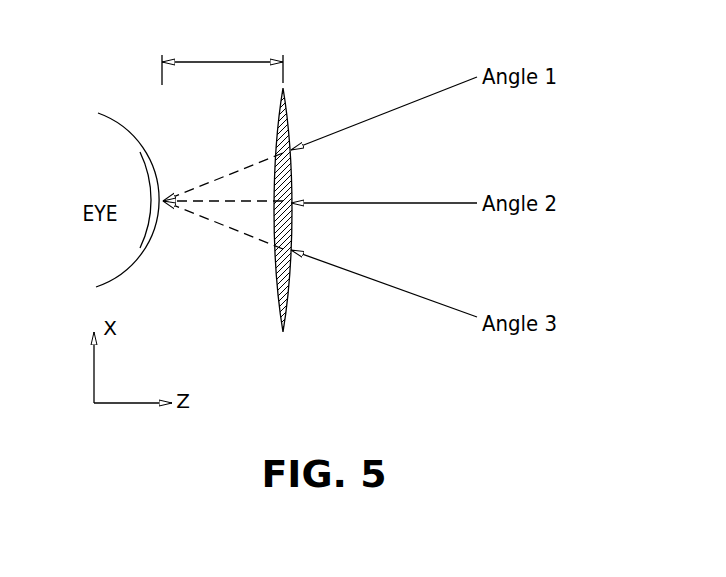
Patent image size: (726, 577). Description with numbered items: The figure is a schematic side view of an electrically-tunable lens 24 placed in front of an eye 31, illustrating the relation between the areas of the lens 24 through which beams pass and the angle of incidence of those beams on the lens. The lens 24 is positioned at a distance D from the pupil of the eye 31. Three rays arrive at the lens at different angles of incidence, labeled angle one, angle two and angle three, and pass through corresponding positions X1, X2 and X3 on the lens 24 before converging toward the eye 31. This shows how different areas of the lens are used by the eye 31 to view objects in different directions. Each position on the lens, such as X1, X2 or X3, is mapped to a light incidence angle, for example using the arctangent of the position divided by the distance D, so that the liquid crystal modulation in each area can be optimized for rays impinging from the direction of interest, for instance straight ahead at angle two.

The eye 31 is at (110, 118).
The electrically-tunable lens 24 is at (279, 306).
The position on the lens X1 is at (223, 168).
The position on the lens X2 is at (223, 188).
The position on the lens X3 is at (223, 235).
The distance D is at (222, 59).